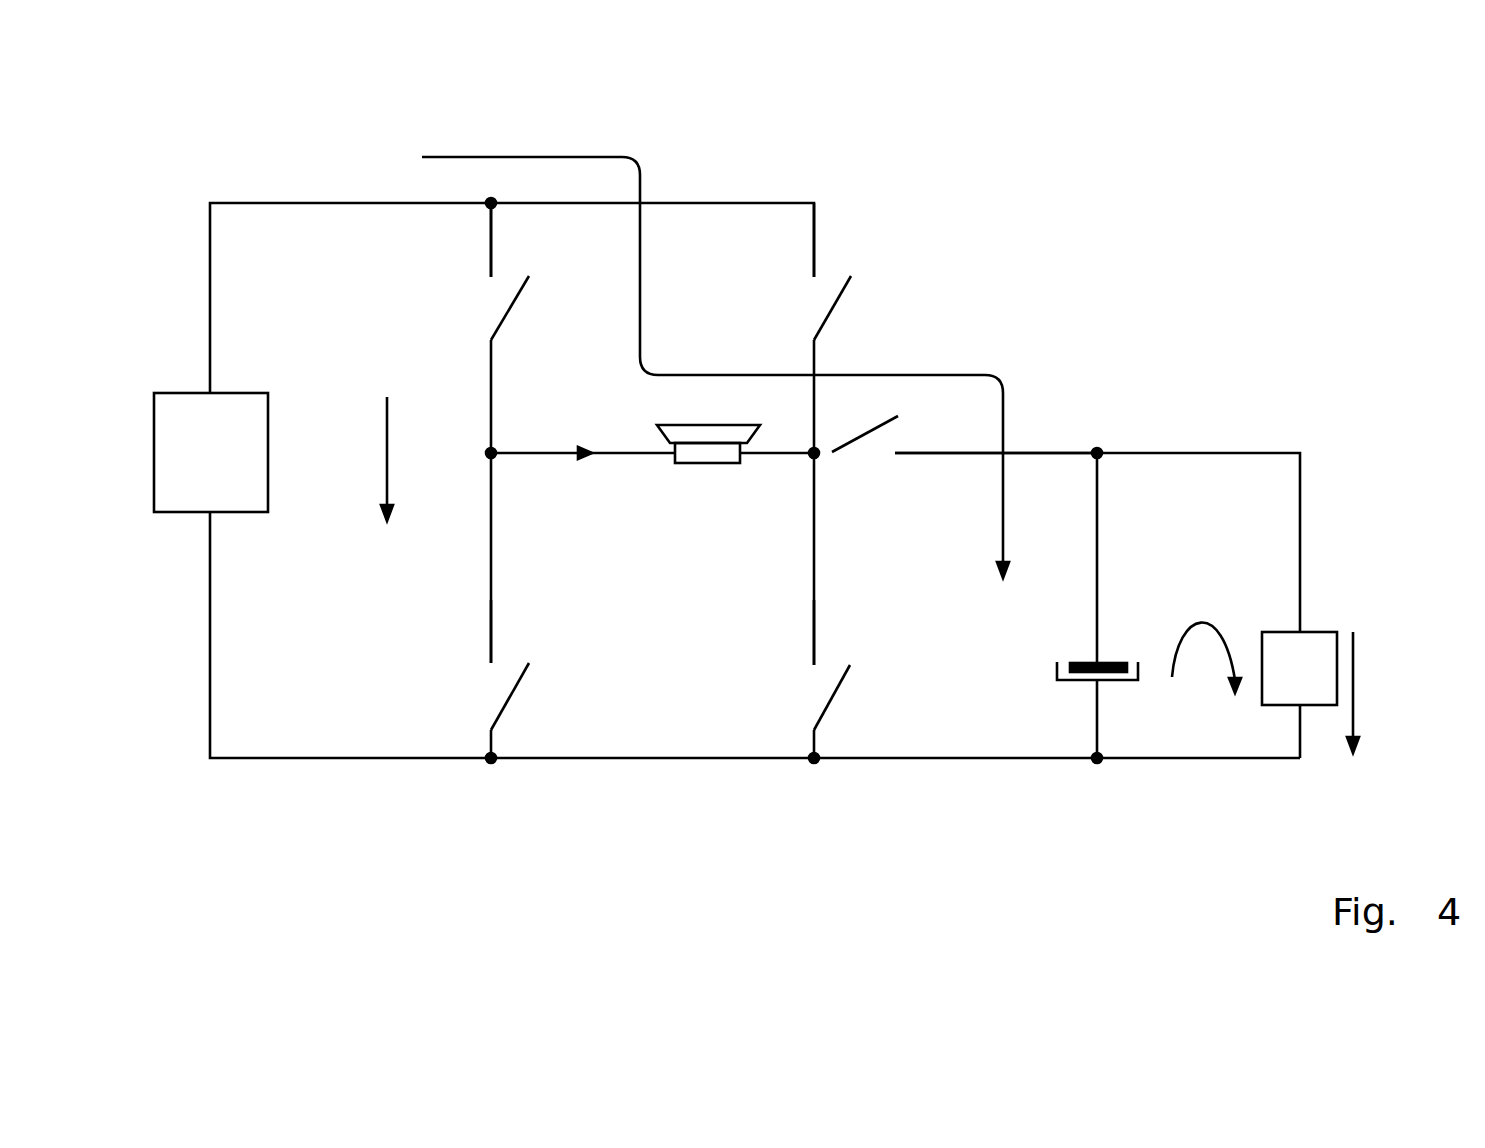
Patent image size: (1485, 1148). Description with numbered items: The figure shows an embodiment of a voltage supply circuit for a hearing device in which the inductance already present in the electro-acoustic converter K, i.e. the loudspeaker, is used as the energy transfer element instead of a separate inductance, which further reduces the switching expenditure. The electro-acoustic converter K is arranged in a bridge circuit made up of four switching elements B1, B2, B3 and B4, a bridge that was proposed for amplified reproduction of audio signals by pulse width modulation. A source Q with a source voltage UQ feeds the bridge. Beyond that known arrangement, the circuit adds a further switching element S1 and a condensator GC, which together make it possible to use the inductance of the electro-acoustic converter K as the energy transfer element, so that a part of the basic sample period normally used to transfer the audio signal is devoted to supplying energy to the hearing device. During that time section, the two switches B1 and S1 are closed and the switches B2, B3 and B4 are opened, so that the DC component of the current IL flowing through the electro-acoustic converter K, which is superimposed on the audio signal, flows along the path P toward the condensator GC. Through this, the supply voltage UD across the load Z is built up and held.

The source Q is at (211, 452).
The source voltage UQ is at (335, 459).
The switching element B1 is at (428, 328).
The switching element B2 is at (427, 679).
The switching element B3 is at (888, 317).
The switching element B4 is at (749, 679).
The current IL is at (583, 488).
The electro-acoustic converter K is at (703, 453).
The switching element S1 is at (964, 485).
The power flow path P is at (965, 372).
The condensator GC is at (1029, 605).
The load Z is at (1299, 668).
The supply voltage UD is at (1408, 692).